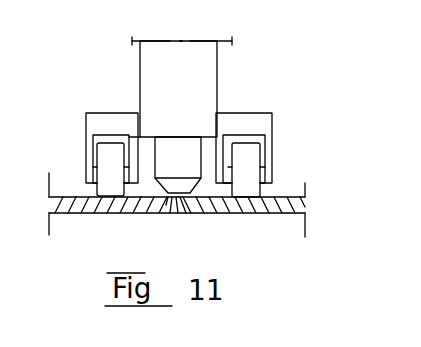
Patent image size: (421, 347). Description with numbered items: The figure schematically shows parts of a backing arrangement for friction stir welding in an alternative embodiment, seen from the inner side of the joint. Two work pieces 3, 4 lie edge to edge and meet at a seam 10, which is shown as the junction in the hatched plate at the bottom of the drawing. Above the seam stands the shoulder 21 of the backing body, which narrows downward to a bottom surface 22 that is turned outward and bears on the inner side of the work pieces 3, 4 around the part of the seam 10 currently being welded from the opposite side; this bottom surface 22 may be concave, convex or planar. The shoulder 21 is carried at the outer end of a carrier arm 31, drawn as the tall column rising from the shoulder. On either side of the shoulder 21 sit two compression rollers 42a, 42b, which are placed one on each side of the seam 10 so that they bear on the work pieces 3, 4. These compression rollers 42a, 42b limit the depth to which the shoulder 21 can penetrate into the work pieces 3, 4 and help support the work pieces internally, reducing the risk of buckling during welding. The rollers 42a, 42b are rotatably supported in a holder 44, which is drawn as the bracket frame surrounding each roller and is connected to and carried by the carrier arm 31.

The work piece 3 is at (80, 207).
The work piece 4 is at (280, 213).
The seam 10 is at (173, 200).
The shoulder 21 is at (163, 185).
The bottom surface 22 is at (183, 198).
The carrier arm 31 is at (217, 60).
The compression roller 42a is at (100, 157).
The compression roller 42b is at (252, 158).
The holder 44 is at (242, 122).